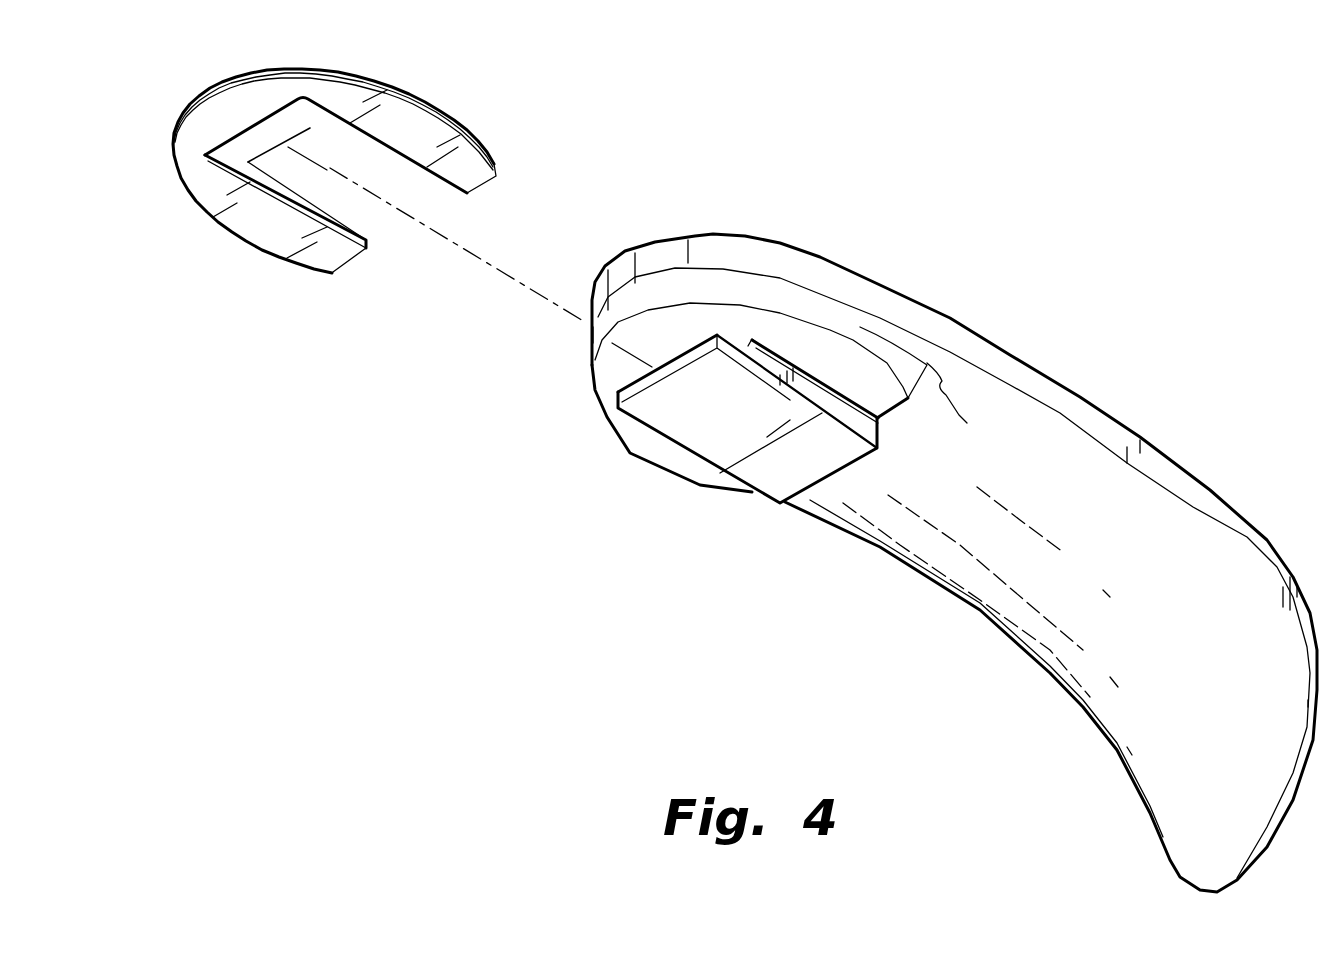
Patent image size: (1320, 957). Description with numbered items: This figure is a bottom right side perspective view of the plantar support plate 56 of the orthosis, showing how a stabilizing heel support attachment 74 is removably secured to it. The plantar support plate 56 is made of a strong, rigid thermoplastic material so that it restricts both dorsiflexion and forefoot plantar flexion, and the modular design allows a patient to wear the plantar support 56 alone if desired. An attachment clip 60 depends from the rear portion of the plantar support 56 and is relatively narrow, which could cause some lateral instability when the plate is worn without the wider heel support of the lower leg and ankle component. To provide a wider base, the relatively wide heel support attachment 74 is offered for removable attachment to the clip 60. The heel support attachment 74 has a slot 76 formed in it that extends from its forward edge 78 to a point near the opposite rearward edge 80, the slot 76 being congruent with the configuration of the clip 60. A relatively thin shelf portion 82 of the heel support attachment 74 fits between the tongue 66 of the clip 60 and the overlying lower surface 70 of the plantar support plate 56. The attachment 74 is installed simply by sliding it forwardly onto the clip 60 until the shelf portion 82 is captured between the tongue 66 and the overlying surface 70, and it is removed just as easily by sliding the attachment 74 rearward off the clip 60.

The plantar support plate 56 is at (977, 608).
The attachment clip 60 is at (781, 504).
The tongue 66 is at (684, 355).
The lower surface 70 is at (750, 327).
The heel support attachment 74 is at (264, 256).
The slot 76 is at (384, 216).
The forward edge 78 is at (483, 185).
The rearward edge 80 is at (212, 93).
The shelf portion 82 is at (309, 130).